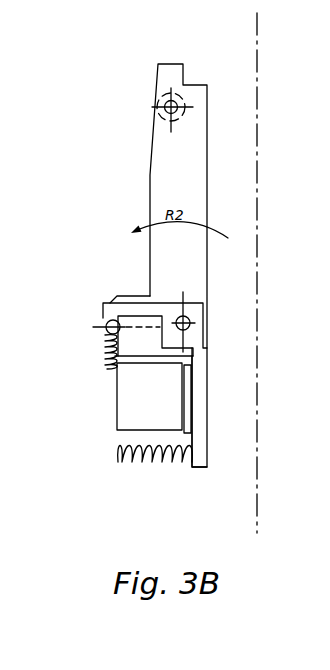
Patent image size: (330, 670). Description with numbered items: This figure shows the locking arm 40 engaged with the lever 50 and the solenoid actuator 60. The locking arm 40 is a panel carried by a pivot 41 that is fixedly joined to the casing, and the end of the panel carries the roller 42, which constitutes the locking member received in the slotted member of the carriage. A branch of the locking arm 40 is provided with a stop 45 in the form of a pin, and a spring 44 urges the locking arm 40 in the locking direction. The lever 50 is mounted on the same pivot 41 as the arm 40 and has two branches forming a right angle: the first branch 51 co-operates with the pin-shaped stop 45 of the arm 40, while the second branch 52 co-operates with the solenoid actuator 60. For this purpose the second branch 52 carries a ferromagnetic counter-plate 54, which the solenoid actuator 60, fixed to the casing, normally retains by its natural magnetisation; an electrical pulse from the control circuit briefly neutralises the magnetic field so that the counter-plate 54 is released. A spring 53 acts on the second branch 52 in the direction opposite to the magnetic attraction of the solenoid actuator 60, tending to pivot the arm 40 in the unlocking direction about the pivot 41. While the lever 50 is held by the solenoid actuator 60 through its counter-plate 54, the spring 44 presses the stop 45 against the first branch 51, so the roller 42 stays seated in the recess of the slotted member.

The locking arm 40 is at (170, 171).
The pivot 41 is at (189, 319).
The roller 42 is at (157, 104).
The spring 44 is at (106, 357).
The stop 45 is at (98, 327).
The lever 50 is at (206, 344).
The first branch 51 is at (143, 304).
The second branch 52 is at (206, 386).
The spring 53 is at (137, 460).
The ferromagnetic counter-plate 54 is at (191, 412).
The solenoid actuator 60 is at (138, 397).